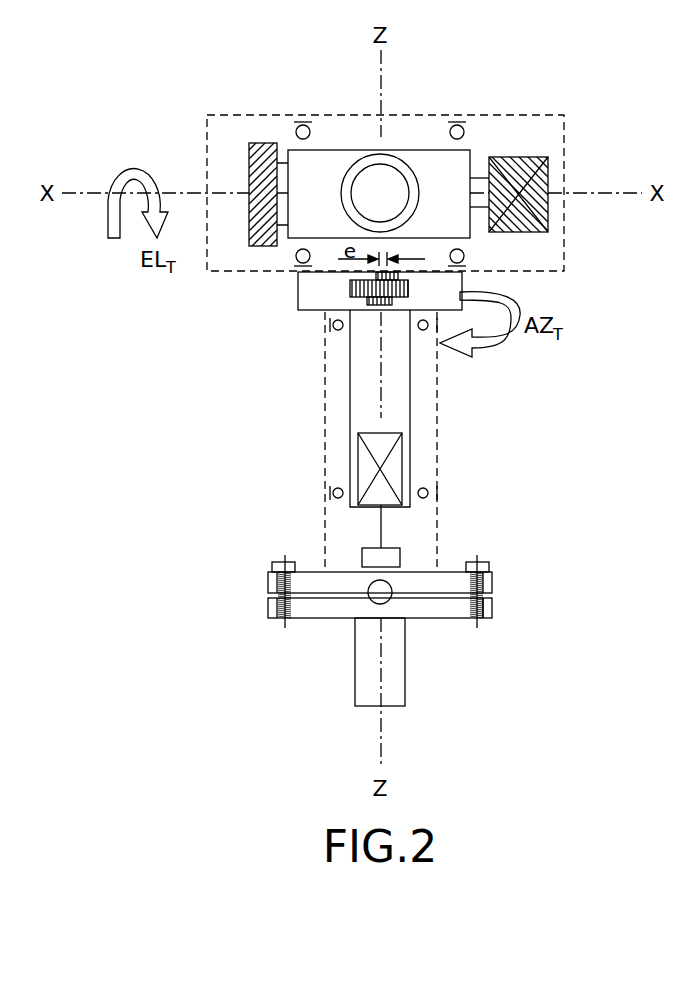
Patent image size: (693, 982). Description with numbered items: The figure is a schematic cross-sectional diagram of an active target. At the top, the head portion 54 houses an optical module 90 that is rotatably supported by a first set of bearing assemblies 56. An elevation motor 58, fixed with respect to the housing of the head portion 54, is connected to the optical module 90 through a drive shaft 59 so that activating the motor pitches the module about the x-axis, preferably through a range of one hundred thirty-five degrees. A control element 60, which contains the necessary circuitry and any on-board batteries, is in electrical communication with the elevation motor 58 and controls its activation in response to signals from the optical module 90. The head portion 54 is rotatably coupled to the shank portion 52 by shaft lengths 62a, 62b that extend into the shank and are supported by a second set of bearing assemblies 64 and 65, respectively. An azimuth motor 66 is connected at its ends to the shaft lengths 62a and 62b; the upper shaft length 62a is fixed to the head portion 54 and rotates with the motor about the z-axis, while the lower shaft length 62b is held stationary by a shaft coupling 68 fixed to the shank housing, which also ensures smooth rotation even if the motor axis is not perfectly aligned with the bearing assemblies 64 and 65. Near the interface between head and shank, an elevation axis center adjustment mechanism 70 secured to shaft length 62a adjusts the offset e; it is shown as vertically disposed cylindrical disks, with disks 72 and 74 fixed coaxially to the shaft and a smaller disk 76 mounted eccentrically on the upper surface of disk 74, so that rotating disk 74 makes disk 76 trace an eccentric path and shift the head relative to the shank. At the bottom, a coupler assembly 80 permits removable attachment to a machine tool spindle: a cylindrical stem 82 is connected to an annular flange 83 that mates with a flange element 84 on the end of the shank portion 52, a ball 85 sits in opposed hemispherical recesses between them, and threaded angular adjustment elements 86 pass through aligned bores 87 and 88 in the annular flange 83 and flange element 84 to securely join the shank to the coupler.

The shank portion 52 is at (325, 440).
The head portion 54 is at (524, 114).
The first set of bearing assemblies 56 is at (309, 127).
The elevation motor 58 is at (540, 182).
The drive shaft 59 is at (478, 207).
The control element 60 is at (264, 153).
The shaft length 62a is at (410, 398).
The shaft length 62b is at (382, 532).
The bearing assembly 64 is at (425, 331).
The bearing assembly 65 is at (428, 490).
The azimuth motor 66 is at (370, 433).
The shaft coupling 68 is at (400, 557).
The elevation axis center adjustment mechanism 70 is at (320, 299).
The disk 72 is at (367, 301).
The disk 74 is at (408, 284).
The disk 76 is at (376, 274).
The coupler assembly 80 is at (468, 706).
The cylindrical stem 82 is at (355, 660).
The annular flange 83 is at (318, 618).
The flange element 84 is at (284, 562).
The ball 85 is at (388, 603).
The angular adjustment elements 86 is at (490, 585).
The bores 87 is at (275, 582).
The bores 88 is at (492, 608).
The optical module 90 is at (380, 173).